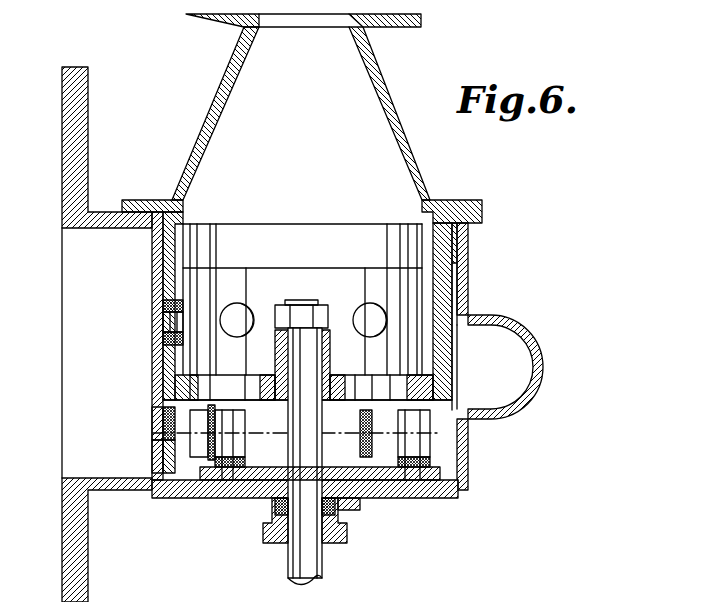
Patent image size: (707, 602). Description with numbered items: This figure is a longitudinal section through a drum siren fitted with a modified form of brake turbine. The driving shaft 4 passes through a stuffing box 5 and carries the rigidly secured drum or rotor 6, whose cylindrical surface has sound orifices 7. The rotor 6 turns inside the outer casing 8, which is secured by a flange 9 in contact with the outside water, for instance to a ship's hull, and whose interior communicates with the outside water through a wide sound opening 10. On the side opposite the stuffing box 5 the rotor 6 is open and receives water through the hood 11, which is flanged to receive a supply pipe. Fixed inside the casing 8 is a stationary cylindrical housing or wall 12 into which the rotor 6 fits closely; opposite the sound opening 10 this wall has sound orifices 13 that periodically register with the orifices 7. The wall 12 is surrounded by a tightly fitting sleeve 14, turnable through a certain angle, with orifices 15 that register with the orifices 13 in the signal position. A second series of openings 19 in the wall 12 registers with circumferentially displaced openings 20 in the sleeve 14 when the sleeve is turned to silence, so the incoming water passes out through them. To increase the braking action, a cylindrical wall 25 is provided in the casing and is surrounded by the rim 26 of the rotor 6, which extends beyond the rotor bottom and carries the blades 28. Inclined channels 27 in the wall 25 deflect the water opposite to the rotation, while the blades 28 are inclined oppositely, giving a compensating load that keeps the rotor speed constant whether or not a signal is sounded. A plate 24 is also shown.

The driving shaft 4 is at (300, 560).
The stuffing box 5 is at (265, 541).
The rotor 6 is at (300, 302).
The sound orifices 7 is at (237, 314).
The outer casing 8 is at (348, 497).
The flange 9 is at (73, 594).
The sound opening 10 is at (70, 358).
The hood 11 is at (302, 118).
The stationary cylindrical housing 12 is at (157, 384).
The sound orifices 13 is at (167, 318).
The sleeve 14 is at (158, 286).
The orifices 15 is at (158, 330).
The openings 19 is at (165, 448).
The openings 20 is at (160, 428).
The plate 24 is at (377, 389).
The cylindrical wall 25 is at (224, 412).
The rim 26 is at (274, 386).
The inclined channels 27 is at (208, 480).
The blades 28 is at (177, 462).